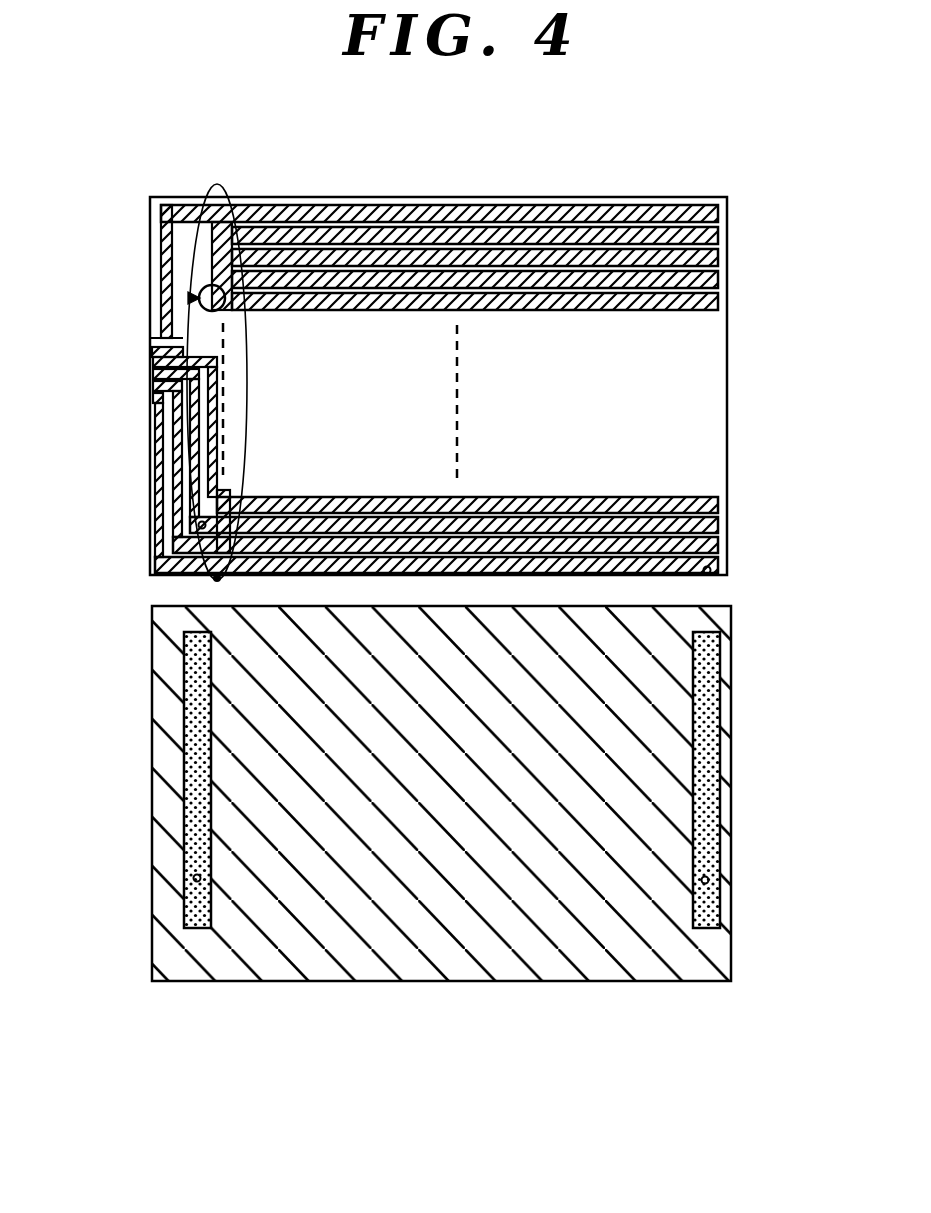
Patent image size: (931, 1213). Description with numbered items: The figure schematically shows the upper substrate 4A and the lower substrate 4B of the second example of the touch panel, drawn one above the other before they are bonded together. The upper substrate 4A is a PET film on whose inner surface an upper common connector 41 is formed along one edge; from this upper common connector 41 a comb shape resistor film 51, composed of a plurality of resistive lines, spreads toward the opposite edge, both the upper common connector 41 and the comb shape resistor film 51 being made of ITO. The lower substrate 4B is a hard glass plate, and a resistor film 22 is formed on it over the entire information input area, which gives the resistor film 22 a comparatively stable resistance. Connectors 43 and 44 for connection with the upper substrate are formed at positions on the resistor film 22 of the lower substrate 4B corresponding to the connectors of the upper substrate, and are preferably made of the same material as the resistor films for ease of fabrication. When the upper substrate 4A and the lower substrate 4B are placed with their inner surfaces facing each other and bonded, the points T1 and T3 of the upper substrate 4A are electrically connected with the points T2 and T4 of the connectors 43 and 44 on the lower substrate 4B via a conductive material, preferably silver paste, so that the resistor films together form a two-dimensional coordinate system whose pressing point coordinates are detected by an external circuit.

The upper substrate 4A is at (728, 360).
The lower substrate 4B is at (150, 772).
The comb shape resistor film 51 is at (512, 205).
The upper common connector 41 is at (224, 188).
The connector 43 is at (184, 818).
The connector 44 is at (721, 756).
The resistor film 22 is at (448, 958).
The connection point T1 is at (196, 526).
The connection point T2 is at (194, 878).
The connection point T3 is at (718, 572).
The connection point T4 is at (722, 888).